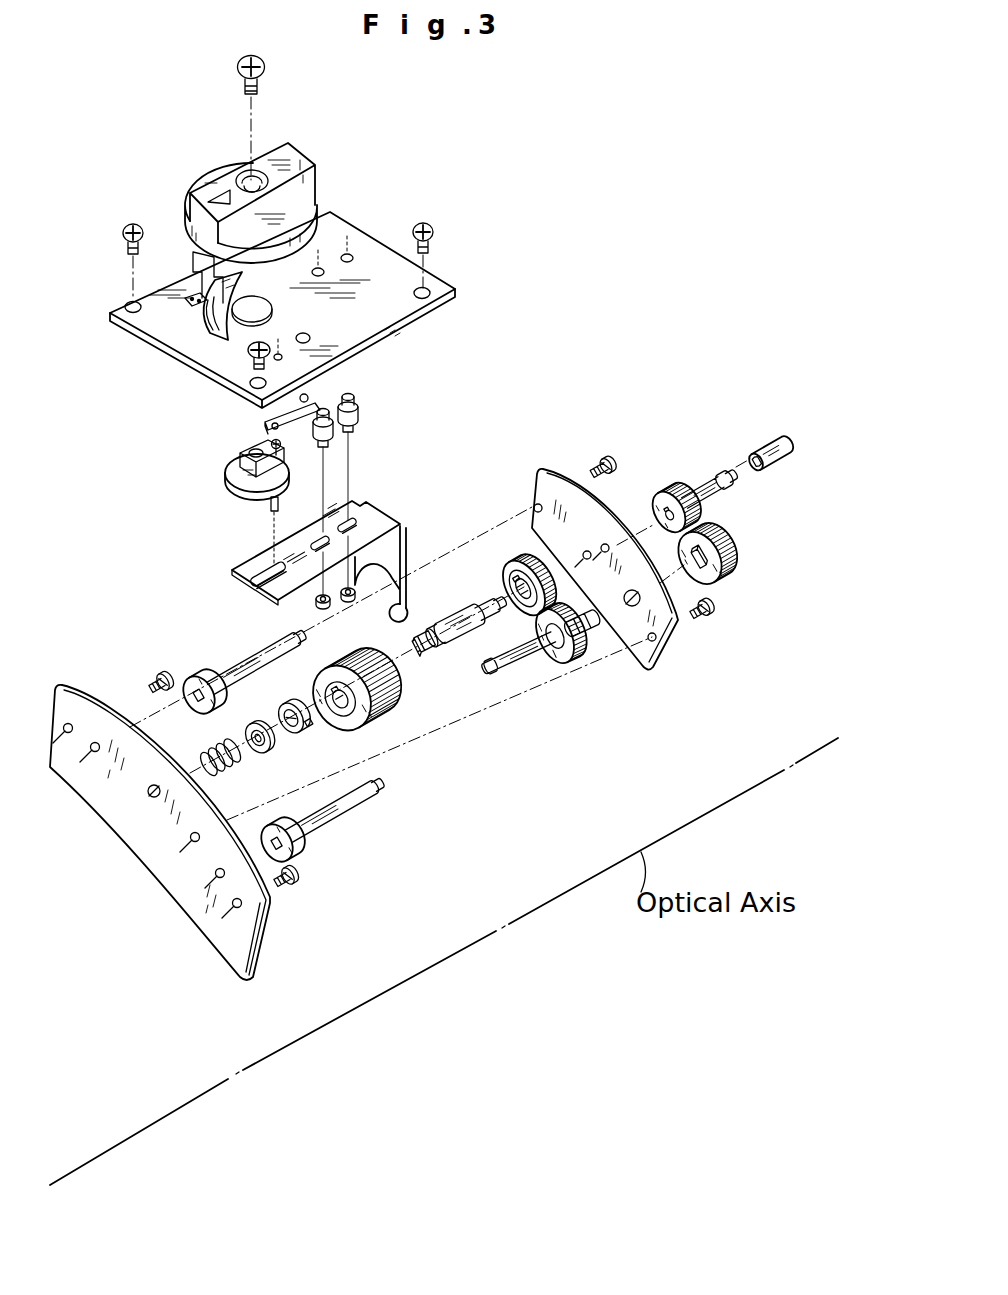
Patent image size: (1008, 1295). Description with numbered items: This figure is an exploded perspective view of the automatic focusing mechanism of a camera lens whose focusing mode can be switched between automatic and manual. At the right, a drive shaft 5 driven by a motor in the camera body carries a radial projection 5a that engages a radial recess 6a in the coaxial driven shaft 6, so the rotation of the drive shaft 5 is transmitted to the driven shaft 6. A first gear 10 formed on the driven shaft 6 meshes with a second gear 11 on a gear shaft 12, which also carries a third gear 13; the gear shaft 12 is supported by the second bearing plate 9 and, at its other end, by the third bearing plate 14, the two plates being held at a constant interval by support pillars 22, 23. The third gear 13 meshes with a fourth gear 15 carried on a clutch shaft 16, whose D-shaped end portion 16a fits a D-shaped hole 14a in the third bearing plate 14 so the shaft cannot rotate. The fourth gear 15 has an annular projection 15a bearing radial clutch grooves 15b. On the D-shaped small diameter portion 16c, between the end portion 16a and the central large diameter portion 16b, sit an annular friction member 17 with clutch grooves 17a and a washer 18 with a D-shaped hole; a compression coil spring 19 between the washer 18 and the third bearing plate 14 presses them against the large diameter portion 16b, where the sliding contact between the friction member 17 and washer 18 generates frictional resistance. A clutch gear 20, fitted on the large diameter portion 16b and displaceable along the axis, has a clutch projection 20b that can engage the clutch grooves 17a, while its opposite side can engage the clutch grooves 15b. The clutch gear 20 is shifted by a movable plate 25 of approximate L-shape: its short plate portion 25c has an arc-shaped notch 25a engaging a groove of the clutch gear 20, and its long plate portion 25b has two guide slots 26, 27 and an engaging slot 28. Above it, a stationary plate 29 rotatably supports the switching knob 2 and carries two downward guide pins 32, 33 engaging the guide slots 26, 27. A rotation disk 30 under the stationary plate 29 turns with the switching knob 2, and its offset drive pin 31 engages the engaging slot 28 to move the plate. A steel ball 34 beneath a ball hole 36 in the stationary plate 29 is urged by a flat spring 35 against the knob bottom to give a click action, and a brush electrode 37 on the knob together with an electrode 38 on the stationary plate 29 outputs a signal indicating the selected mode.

The switching knob 2 is at (297, 165).
The drive shaft 5 is at (773, 437).
The projection 5a is at (750, 452).
The driven shaft 6 is at (704, 484).
The recess 6a is at (728, 487).
The second bearing plate 9 is at (655, 650).
The first gear 10 is at (665, 492).
The second gear 11 is at (737, 558).
The gear shaft 12 is at (533, 656).
The third gear 13 is at (572, 664).
The third bearing plate 14 is at (250, 943).
The hole 14a is at (150, 797).
The fourth gear 15 is at (510, 566).
The annular projection 15a is at (520, 600).
The clutch grooves 15b is at (515, 552).
The clutch shaft 16 is at (470, 615).
The end portion 16a is at (416, 676).
The large diameter portion 16b is at (476, 671).
The small diameter portion 16c is at (439, 692).
The friction member 17 is at (306, 705).
The clutch grooves 17a is at (308, 722).
The washer 18 is at (263, 752).
The compression coil spring 19 is at (228, 762).
The clutch gear 20 is at (371, 720).
The clutch projection 20b is at (353, 708).
The support pillar 22 is at (247, 667).
The support pillar 23 is at (350, 808).
The movable plate 25 is at (400, 524).
The arc-shaped notch 25a is at (406, 612).
The long plate portion 25b is at (292, 546).
The short plate portion 25c is at (403, 556).
The guide slot 26 is at (323, 534).
The guide slot 27 is at (363, 518).
The engaging slot 28 is at (247, 582).
The stationary plate 29 is at (410, 303).
The rotation disk 30 is at (234, 492).
The drive pin 31 is at (280, 502).
The guide pin 32 is at (334, 430).
The guide pin 33 is at (356, 408).
The steel ball 34 is at (310, 392).
The flat spring 35 is at (265, 418).
The ball hole 36 is at (306, 335).
The brush electrode 37 is at (193, 291).
The electrode 38 is at (216, 338).